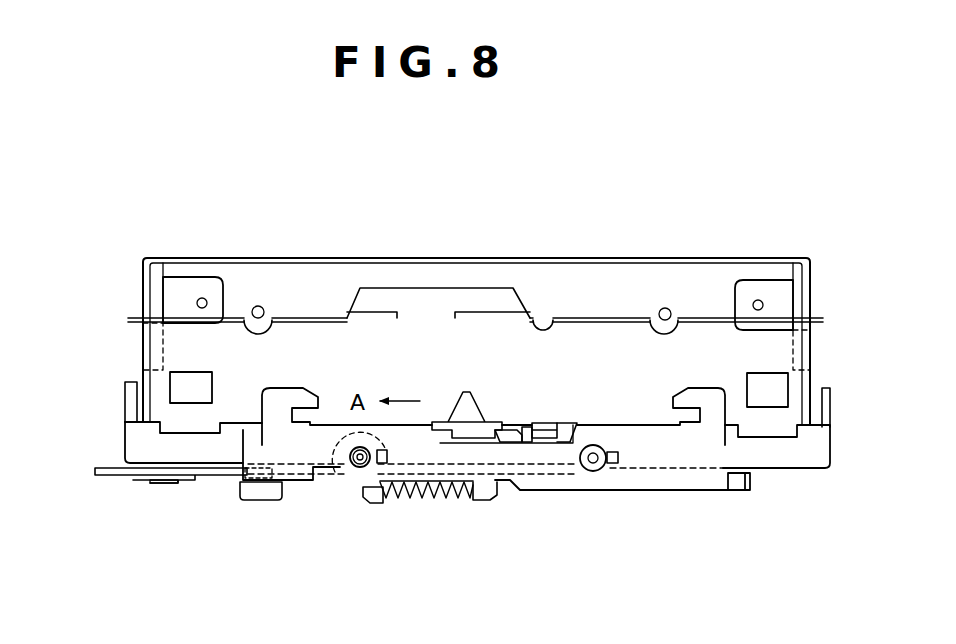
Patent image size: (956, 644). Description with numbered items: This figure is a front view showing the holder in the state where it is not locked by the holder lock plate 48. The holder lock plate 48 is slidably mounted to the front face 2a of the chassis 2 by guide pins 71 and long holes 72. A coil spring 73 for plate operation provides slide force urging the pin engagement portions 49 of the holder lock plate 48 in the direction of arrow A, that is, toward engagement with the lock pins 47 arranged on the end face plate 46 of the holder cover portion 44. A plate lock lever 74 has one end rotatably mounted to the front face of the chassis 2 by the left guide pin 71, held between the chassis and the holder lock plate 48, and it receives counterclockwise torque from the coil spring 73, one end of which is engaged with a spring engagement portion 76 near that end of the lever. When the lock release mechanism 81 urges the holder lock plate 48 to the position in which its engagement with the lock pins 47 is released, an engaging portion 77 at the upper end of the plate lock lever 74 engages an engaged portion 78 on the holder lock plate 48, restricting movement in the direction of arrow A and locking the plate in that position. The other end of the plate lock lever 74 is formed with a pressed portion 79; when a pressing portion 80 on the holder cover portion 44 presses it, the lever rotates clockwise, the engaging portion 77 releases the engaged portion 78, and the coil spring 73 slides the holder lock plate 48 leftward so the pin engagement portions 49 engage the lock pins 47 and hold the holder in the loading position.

The chassis 2 is at (116, 446).
The front face of the chassis 2a is at (127, 472).
The cover portion 44 is at (178, 256).
The end face plate 46 is at (206, 265).
The lock pins 47 is at (257, 305).
The holder lock plate 48 is at (222, 474).
The pin engagement portions 49 is at (270, 392).
The guide pins 71 is at (348, 470).
The long holes 72 is at (374, 466).
The coil spring for plate operation 73 is at (426, 496).
The plate lock lever 74 is at (520, 492).
The spring engagement portion 76 is at (367, 505).
The engaging portion 77 is at (487, 420).
The engaged portion 78 is at (500, 430).
The pressed portion 79 is at (545, 424).
The pressing portion 80 is at (541, 320).
The lock release mechanism 81 is at (175, 493).